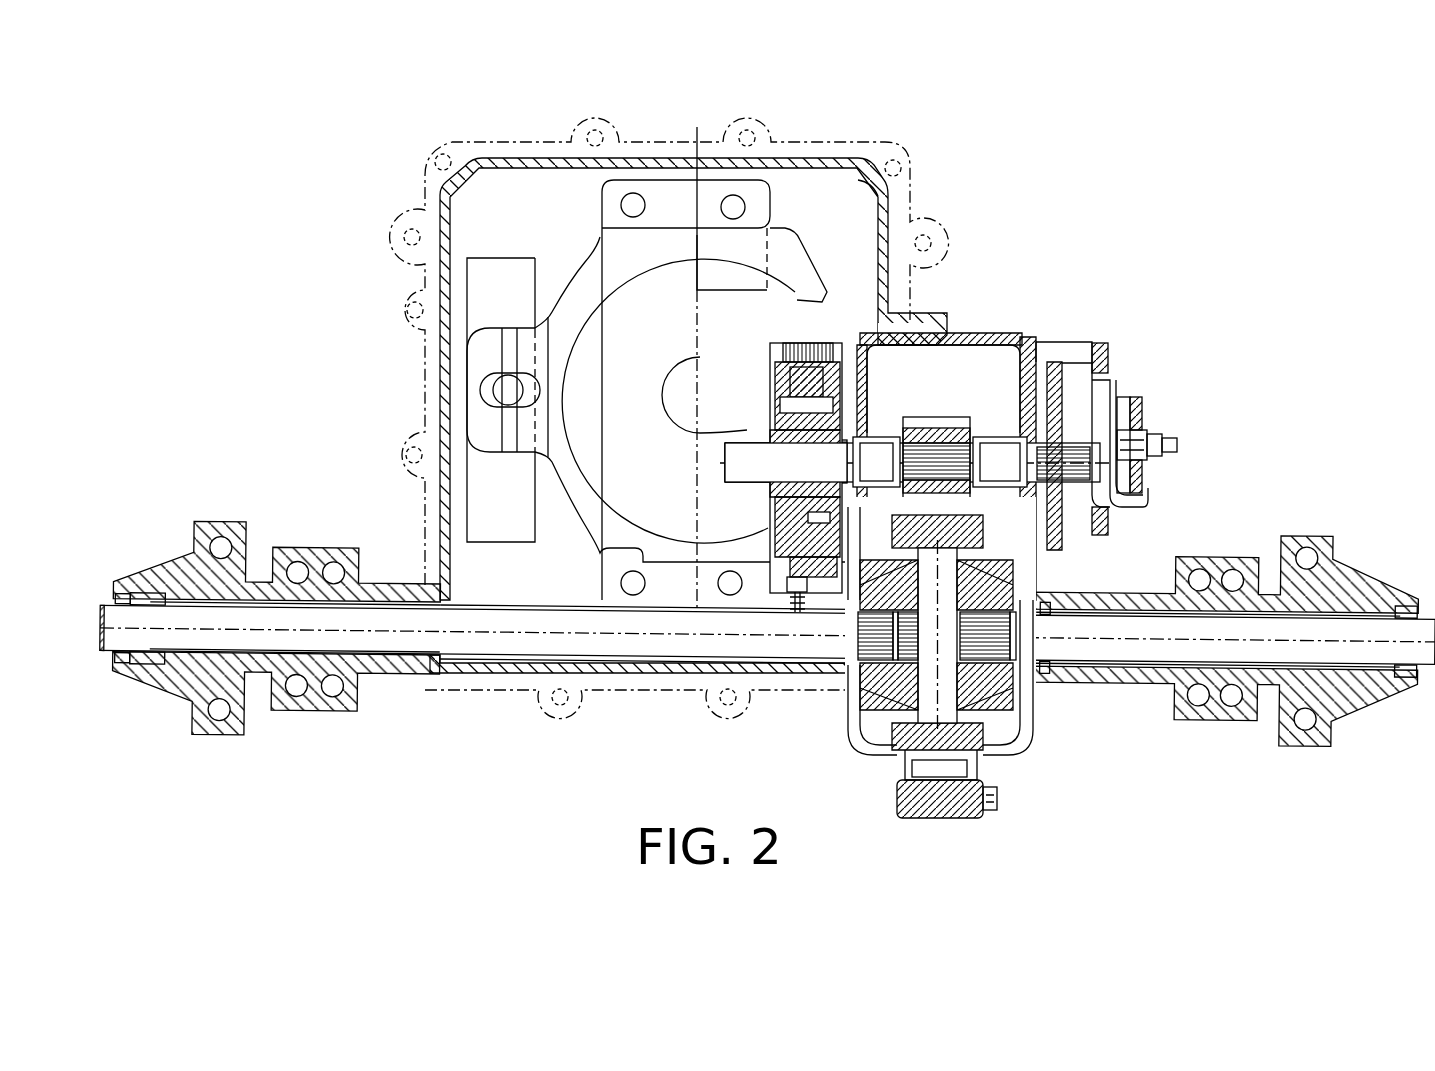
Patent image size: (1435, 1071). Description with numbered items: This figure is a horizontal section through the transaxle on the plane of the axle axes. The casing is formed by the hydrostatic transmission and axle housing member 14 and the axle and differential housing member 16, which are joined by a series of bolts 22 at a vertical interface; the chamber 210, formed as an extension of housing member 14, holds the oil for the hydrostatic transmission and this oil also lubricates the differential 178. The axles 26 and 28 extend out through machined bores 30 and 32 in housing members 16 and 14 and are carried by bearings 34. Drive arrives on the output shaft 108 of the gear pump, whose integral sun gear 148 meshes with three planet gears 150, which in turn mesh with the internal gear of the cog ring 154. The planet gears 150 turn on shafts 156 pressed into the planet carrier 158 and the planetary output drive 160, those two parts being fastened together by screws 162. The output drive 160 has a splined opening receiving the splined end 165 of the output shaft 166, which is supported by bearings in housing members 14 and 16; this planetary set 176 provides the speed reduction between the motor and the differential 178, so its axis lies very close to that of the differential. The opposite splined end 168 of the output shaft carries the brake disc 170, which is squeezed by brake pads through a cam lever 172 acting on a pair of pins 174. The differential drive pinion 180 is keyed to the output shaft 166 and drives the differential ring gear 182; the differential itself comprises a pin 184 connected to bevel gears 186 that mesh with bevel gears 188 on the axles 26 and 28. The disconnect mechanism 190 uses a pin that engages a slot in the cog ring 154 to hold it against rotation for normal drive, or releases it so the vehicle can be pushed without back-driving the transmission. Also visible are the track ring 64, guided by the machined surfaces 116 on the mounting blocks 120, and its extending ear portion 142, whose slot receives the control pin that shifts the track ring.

The hydrostatic transmission and axle housing member 14 is at (488, 155).
The axle and differential housing member 16 is at (1040, 733).
The bolts 22 is at (993, 804).
The axle 26 is at (372, 637).
The axle 28 is at (1412, 650).
The machined bore 30 is at (1313, 622).
The machined bore 32 is at (192, 645).
The bearings 34 is at (152, 598).
The track ring 64 is at (622, 247).
The output shaft 108 is at (700, 420).
The machined surfaces 116 is at (545, 320).
The mounting blocks 120 is at (750, 200).
The ear portion 142 is at (485, 355).
The sun gear 148 is at (772, 470).
The planet gears 150 is at (790, 385).
The cog ring 154 is at (780, 350).
The shafts 156 is at (785, 412).
The planet carrier 158 is at (778, 392).
The planetary output drive 160 is at (760, 452).
The screws 162 is at (785, 522).
The splined end 165 is at (775, 480).
The output shaft 166 is at (990, 455).
The end of output shaft 168 is at (1065, 455).
The brake disc 170 is at (1065, 445).
The cam lever 172 is at (1140, 420).
The pins 174 is at (1120, 408).
The planetary set 176 is at (815, 335).
The differential 178 is at (866, 724).
The differential drive pinion 180 is at (948, 415).
The differential ring gear 182 is at (983, 730).
The pin 184 is at (953, 693).
The bevel gears 186 is at (1010, 550).
The bevel gears 188 is at (866, 677).
The hydrostatic transmission disconnect mechanism 190 is at (766, 608).
The chamber 210 is at (515, 221).